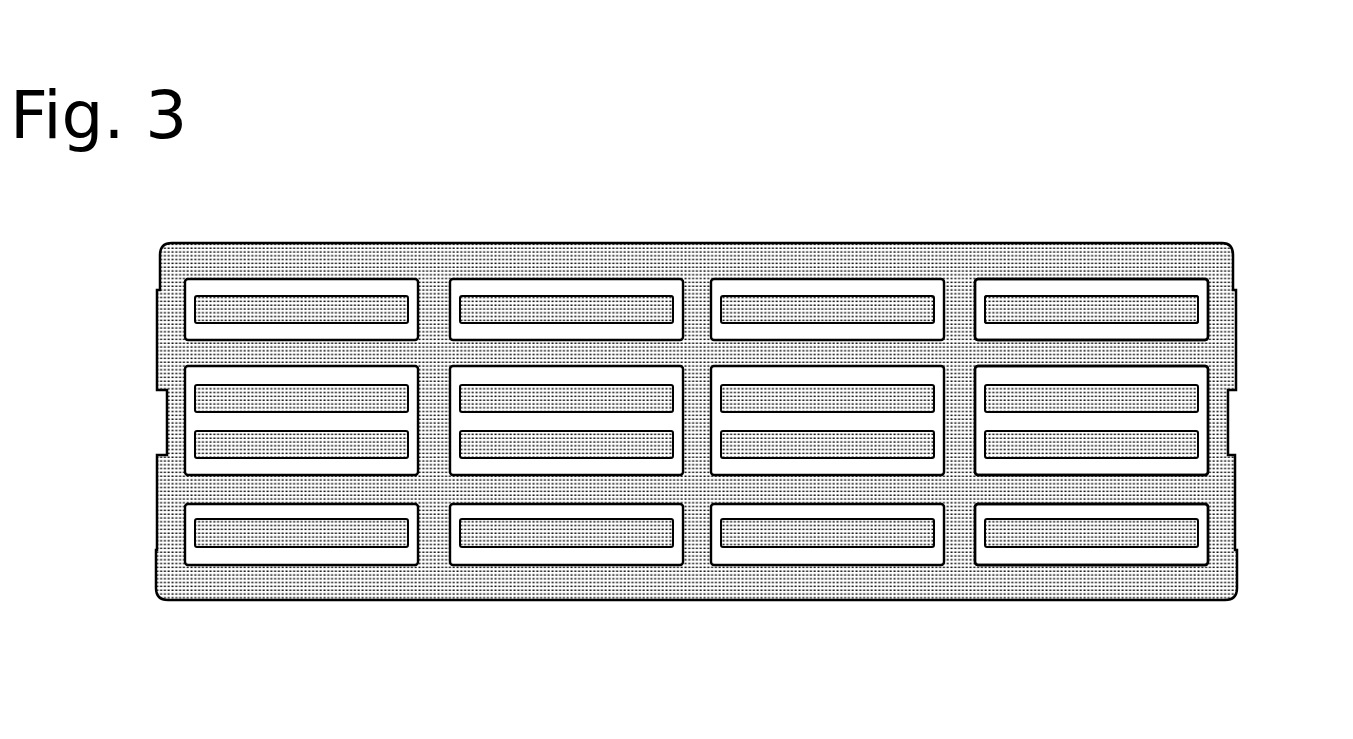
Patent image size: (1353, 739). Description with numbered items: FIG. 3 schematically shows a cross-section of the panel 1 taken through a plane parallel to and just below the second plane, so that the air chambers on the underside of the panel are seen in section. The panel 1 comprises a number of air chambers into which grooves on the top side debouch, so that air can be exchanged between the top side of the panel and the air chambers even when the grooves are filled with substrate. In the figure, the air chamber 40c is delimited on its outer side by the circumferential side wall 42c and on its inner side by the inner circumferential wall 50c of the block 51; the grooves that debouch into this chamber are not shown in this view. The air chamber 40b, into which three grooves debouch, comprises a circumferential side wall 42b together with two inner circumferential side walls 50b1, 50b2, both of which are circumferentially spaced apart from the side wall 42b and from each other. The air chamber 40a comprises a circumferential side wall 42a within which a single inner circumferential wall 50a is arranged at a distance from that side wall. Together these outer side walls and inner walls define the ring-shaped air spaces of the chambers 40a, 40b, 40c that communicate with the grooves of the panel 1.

The panel 1 is at (555, 203).
The air chamber 40a is at (1104, 558).
The air chamber 40b is at (1155, 377).
The air chamber 40c is at (1078, 290).
The circumferential side wall 42a is at (1015, 562).
The circumferential side wall 42b is at (992, 377).
The circumferential side wall 42c is at (1005, 283).
The inner circumferential wall 50a is at (1165, 547).
The inner circumferential side wall 50b1 is at (1170, 413).
The inner circumferential side wall 50b2 is at (1173, 463).
The inner circumferential wall 50c is at (1147, 300).
The block 51 is at (1055, 310).